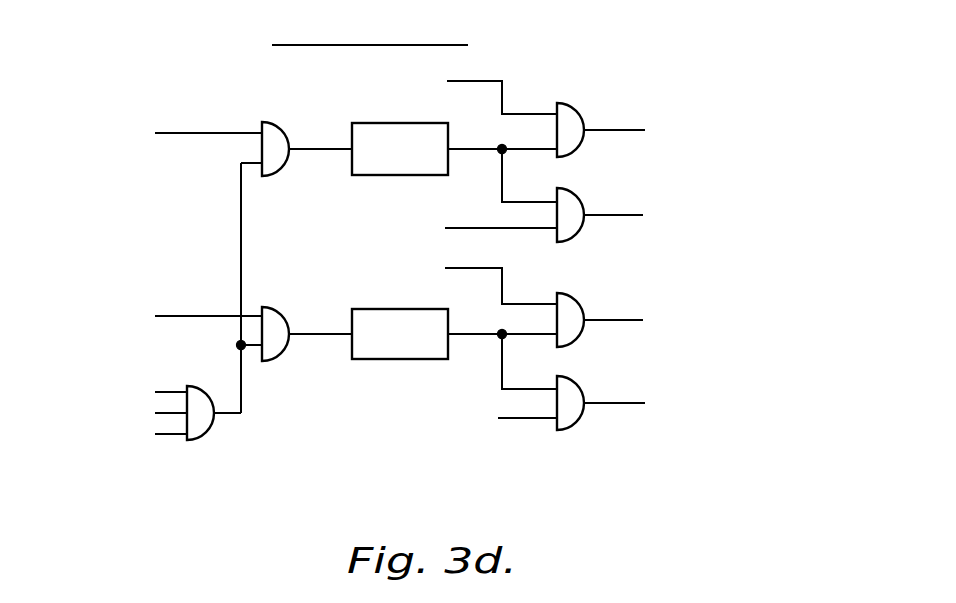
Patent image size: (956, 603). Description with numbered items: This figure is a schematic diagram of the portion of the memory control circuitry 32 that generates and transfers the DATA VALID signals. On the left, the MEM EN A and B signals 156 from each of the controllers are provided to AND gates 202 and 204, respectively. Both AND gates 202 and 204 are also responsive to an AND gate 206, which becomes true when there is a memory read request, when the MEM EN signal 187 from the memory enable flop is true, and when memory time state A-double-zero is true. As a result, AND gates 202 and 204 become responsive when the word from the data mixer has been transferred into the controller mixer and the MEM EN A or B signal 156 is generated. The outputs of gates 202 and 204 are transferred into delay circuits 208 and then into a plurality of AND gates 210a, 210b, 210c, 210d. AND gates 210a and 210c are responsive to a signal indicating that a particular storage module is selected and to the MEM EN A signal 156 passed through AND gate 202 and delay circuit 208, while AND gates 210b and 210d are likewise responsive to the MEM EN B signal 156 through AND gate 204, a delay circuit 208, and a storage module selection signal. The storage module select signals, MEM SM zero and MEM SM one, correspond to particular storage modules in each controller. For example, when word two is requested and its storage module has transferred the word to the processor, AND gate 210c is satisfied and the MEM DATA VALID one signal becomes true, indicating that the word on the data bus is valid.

The memory control circuitry 32 is at (543, 460).
The MEM EN A and B signals 156 is at (191, 133).
The MEM EN signal 187 is at (172, 414).
The AND gate 202 is at (281, 134).
The AND gate 204 is at (281, 312).
The AND gate 206 is at (208, 436).
The delay circuit 208 is at (397, 176).
The AND gate 210a is at (575, 110).
The AND gate 210b is at (574, 194).
The AND gate 210c is at (573, 300).
The AND gate 210d is at (574, 381).